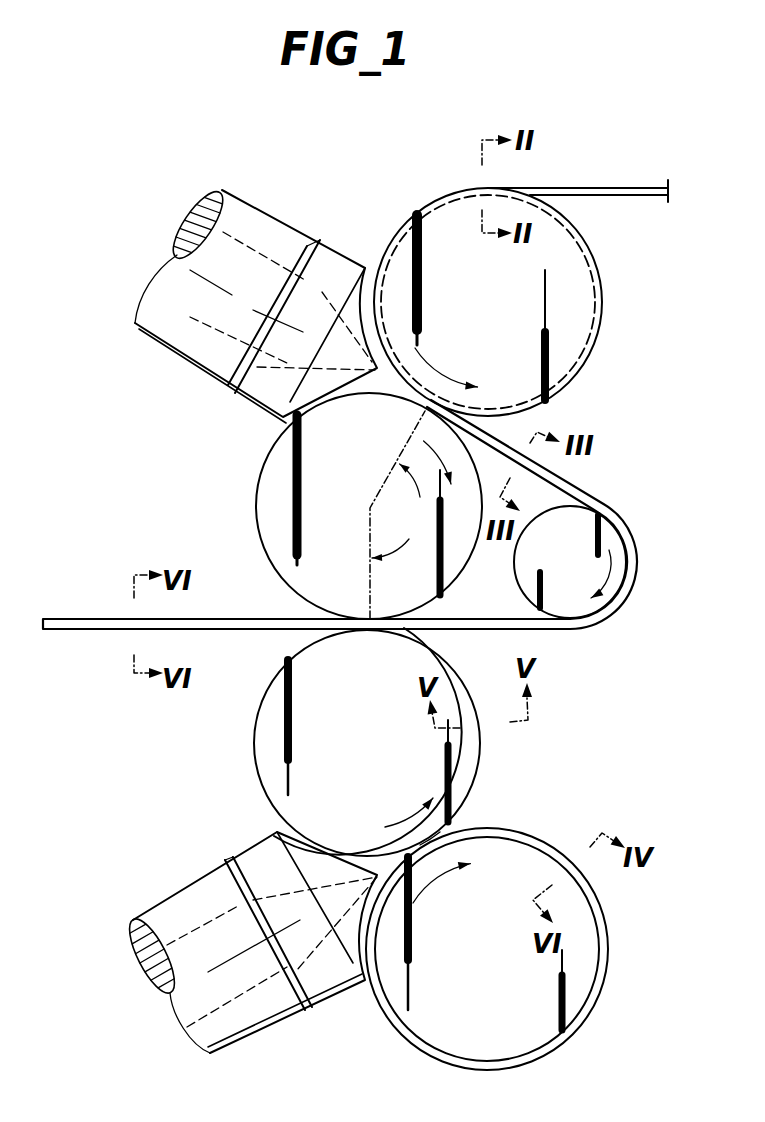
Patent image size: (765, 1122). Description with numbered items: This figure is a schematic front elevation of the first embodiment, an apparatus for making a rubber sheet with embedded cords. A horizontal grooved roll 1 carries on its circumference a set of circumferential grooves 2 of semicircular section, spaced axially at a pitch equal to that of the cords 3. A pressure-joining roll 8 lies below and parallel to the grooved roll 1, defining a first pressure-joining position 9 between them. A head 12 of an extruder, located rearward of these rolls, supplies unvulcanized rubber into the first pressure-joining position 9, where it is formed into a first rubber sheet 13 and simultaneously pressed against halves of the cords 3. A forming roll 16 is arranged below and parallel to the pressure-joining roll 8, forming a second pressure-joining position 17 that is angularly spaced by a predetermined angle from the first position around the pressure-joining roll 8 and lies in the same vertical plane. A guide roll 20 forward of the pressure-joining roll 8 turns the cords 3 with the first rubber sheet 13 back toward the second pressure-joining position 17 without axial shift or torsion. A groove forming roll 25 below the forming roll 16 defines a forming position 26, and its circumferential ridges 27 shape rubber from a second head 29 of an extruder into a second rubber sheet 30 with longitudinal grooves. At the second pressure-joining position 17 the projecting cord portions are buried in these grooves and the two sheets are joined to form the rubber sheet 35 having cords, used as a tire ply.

The grooved roll 1 is at (567, 270).
The circumferential grooves 2 is at (593, 310).
The cords 3 is at (617, 188).
The pressure-joining roll 8 is at (267, 467).
The first pressure-joining position 9 is at (412, 397).
The head of extruder 12 is at (287, 224).
The first rubber sheet 13 is at (589, 497).
The forming roll 16 is at (265, 733).
The second pressure-joining position 17 is at (378, 630).
The guide roll 20 is at (530, 583).
The groove forming roll 25 is at (534, 848).
The forming position 26 is at (422, 847).
The ridges 27 is at (607, 960).
The head of extruder 29 is at (341, 1017).
The second rubber sheet 30 is at (488, 745).
The rubber sheet having cords 35 is at (75, 619).